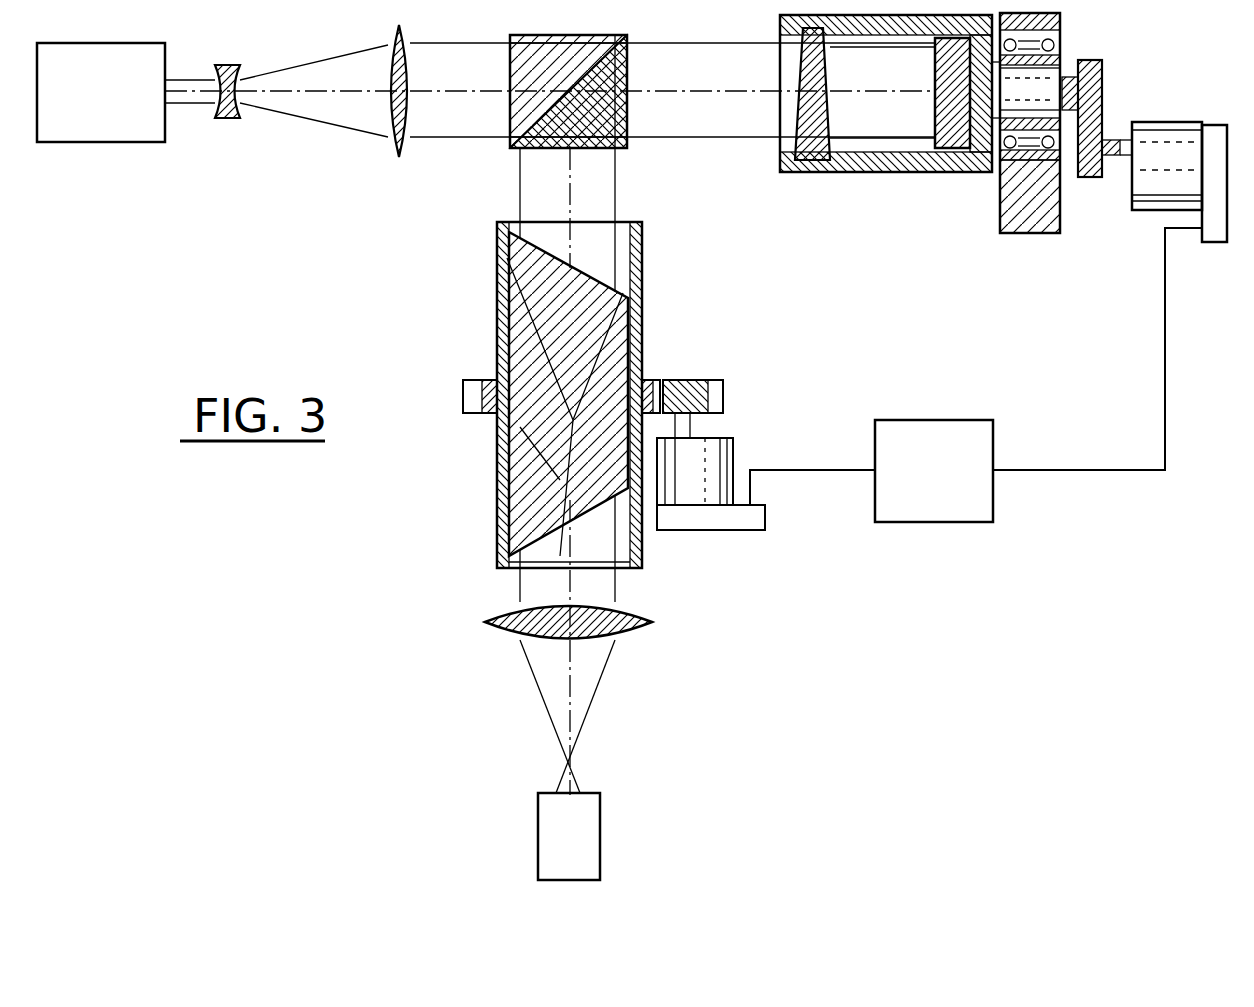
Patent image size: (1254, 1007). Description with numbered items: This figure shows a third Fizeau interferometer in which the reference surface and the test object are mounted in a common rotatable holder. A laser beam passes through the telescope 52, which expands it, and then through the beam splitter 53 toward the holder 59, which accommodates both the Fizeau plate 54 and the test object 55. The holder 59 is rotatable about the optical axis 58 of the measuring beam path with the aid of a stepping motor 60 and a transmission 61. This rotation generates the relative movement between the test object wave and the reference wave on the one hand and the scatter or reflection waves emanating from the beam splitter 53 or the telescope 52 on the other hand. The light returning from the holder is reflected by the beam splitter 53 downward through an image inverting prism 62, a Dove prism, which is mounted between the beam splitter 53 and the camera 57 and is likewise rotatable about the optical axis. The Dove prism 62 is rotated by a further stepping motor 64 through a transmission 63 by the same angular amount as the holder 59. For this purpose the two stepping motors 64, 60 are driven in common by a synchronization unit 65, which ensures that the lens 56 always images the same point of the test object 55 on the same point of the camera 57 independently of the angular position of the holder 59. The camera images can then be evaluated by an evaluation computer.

The telescope 52 is at (399, 140).
The beam splitter 53 is at (622, 148).
The Fizeau plate 54 is at (808, 150).
The test object 55 is at (940, 115).
The lens 56 is at (640, 622).
The camera 57 is at (585, 810).
The optical axis 58 is at (878, 97).
The common holder 59 is at (780, 165).
The stepping motor 60 is at (1180, 132).
The transmission 61 is at (1102, 95).
The image inverting prism 62 is at (642, 295).
The transmission 63 is at (700, 385).
The further stepping motor 64 is at (722, 455).
The synchronization unit 65 is at (932, 522).